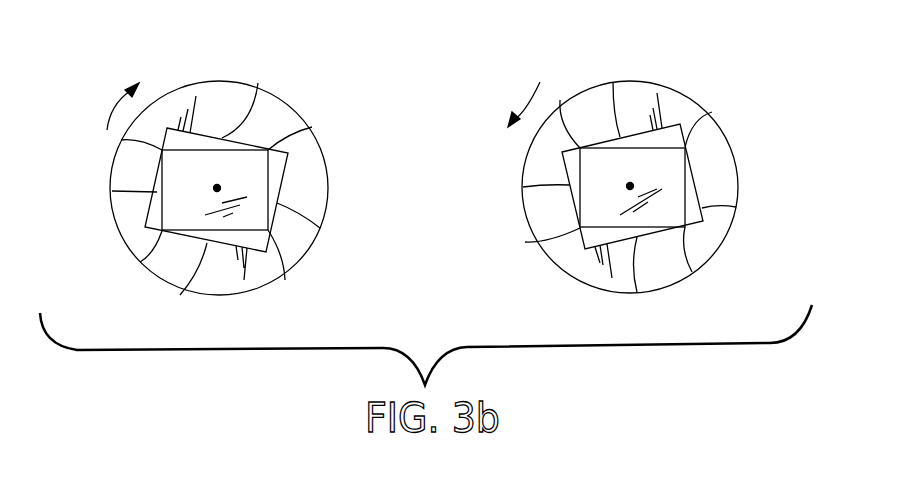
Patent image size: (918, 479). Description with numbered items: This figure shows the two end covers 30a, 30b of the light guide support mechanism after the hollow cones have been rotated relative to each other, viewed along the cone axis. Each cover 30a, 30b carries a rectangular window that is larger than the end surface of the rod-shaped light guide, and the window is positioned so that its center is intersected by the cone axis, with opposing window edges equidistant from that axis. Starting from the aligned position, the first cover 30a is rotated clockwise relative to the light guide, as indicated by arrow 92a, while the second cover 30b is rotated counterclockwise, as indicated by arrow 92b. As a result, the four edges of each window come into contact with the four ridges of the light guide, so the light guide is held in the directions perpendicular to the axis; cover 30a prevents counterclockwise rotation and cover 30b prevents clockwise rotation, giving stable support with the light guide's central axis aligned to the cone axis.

The cover 30a is at (290, 106).
The cover 30b is at (678, 91).
The arrow 92a is at (112, 112).
The arrow 92b is at (522, 105).